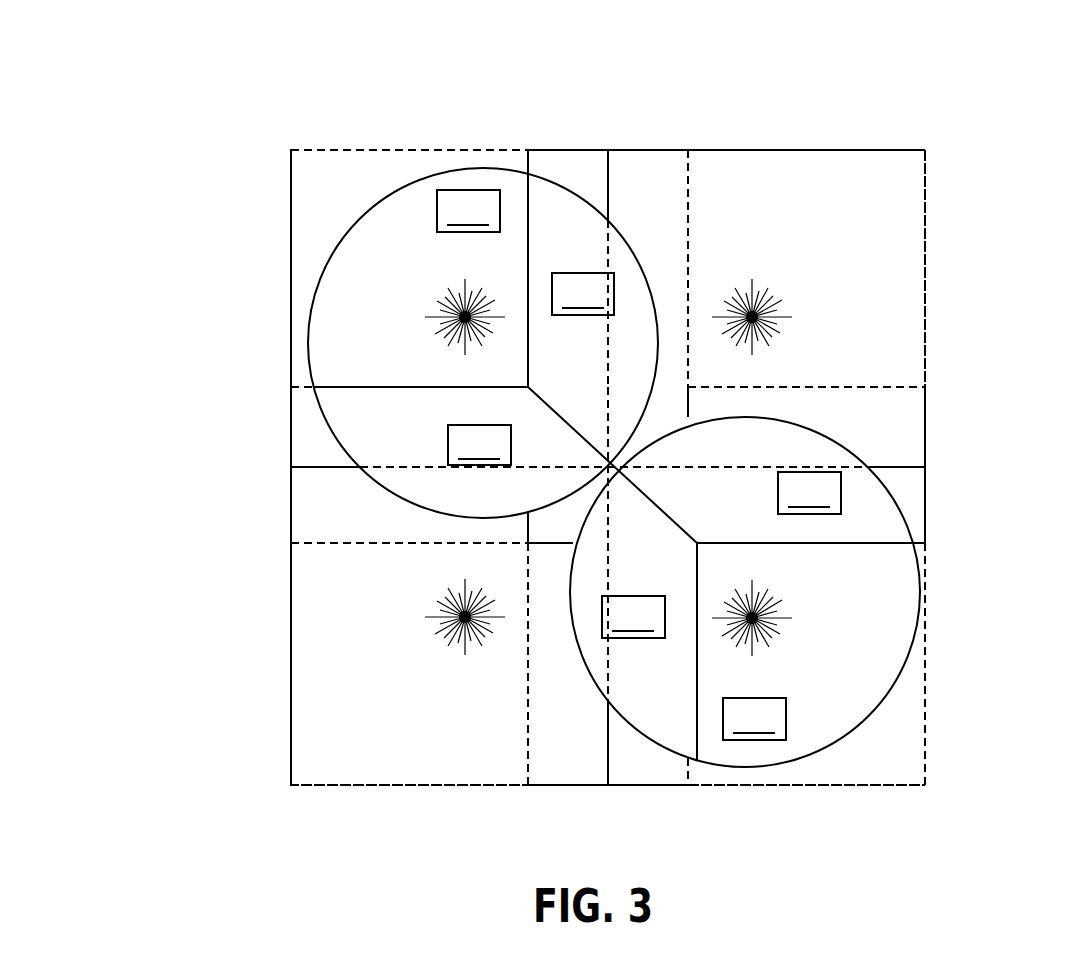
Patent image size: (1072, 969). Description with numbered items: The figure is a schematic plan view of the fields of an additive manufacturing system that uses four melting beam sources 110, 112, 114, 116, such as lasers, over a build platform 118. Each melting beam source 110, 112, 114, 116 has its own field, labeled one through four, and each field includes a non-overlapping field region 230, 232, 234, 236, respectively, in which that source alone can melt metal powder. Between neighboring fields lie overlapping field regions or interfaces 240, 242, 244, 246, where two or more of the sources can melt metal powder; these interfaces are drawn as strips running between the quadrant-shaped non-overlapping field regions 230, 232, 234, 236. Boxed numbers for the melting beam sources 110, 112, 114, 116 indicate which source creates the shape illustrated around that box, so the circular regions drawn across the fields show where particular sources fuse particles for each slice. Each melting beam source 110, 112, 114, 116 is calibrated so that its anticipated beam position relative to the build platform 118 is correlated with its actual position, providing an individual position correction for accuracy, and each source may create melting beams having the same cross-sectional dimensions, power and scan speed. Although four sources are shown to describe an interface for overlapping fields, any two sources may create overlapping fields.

The melting beam source 110 is at (463, 316).
The melting beam source 112 is at (755, 316).
The melting beam source 114 is at (755, 622).
The melting beam source 116 is at (463, 617).
The build platform 118 is at (902, 150).
The non-overlapping field region 230 is at (358, 183).
The non-overlapping field region 232 is at (901, 253).
The non-overlapping field region 234 is at (833, 758).
The non-overlapping field region 236 is at (318, 690).
The overlapping field region 240 is at (647, 118).
The overlapping field region 242 is at (948, 428).
The overlapping field region 244 is at (637, 810).
The overlapping field region 246 is at (266, 516).